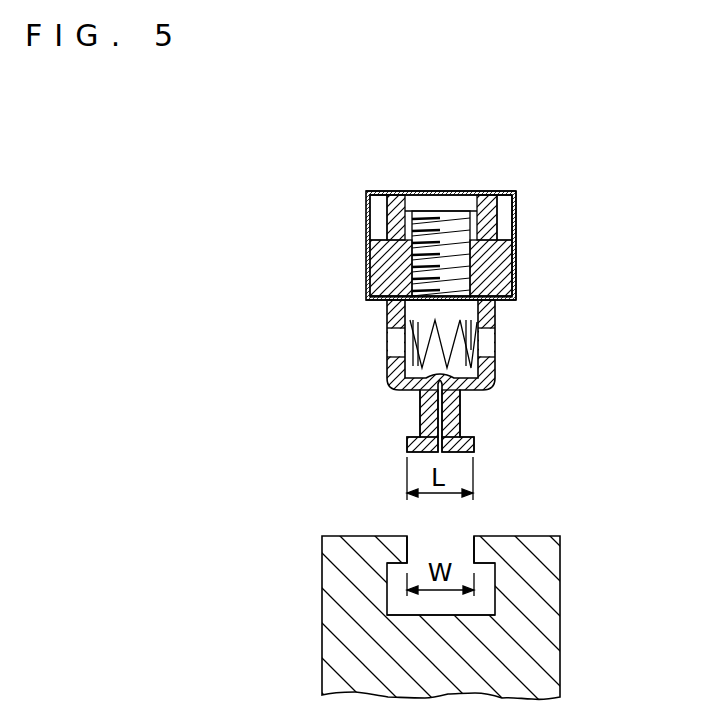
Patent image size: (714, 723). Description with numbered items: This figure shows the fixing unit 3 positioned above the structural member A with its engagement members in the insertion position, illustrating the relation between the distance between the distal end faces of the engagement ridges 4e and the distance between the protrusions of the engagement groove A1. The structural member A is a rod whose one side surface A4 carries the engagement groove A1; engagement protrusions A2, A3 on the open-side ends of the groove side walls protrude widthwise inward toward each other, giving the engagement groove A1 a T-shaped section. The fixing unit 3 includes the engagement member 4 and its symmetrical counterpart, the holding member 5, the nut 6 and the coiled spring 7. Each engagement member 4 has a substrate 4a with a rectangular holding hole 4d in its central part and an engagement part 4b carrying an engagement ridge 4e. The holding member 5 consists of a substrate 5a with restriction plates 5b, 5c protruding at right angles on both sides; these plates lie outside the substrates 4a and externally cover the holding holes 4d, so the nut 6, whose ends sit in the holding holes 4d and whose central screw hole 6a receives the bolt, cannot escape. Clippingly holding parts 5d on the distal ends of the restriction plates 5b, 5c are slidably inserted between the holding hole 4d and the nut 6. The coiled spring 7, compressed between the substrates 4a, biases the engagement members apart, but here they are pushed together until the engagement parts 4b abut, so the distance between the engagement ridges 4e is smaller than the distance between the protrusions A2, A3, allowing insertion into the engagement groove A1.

The fixing unit 3 is at (492, 191).
The holding member 5 is at (405, 191).
The substrate 5a is at (462, 190).
The restriction plate 5b is at (370, 229).
The restriction plate 5c is at (517, 207).
The clippingly holding part 5d is at (498, 302).
The first engagement member 4 is at (387, 367).
The substrate 4a is at (389, 210).
The first engagement part 4b is at (422, 415).
The holding hole 4d is at (394, 245).
The engagement ridge 4e is at (407, 445).
The nut 6 is at (392, 280).
The screw hole 6a is at (472, 264).
The coiled spring 7 is at (392, 387).
The structural member A is at (560, 663).
The engagement groove A1 is at (447, 607).
The engagement protrusion A2 is at (404, 546).
The engagement protrusion A3 is at (476, 546).
The one side surface A4 is at (355, 536).